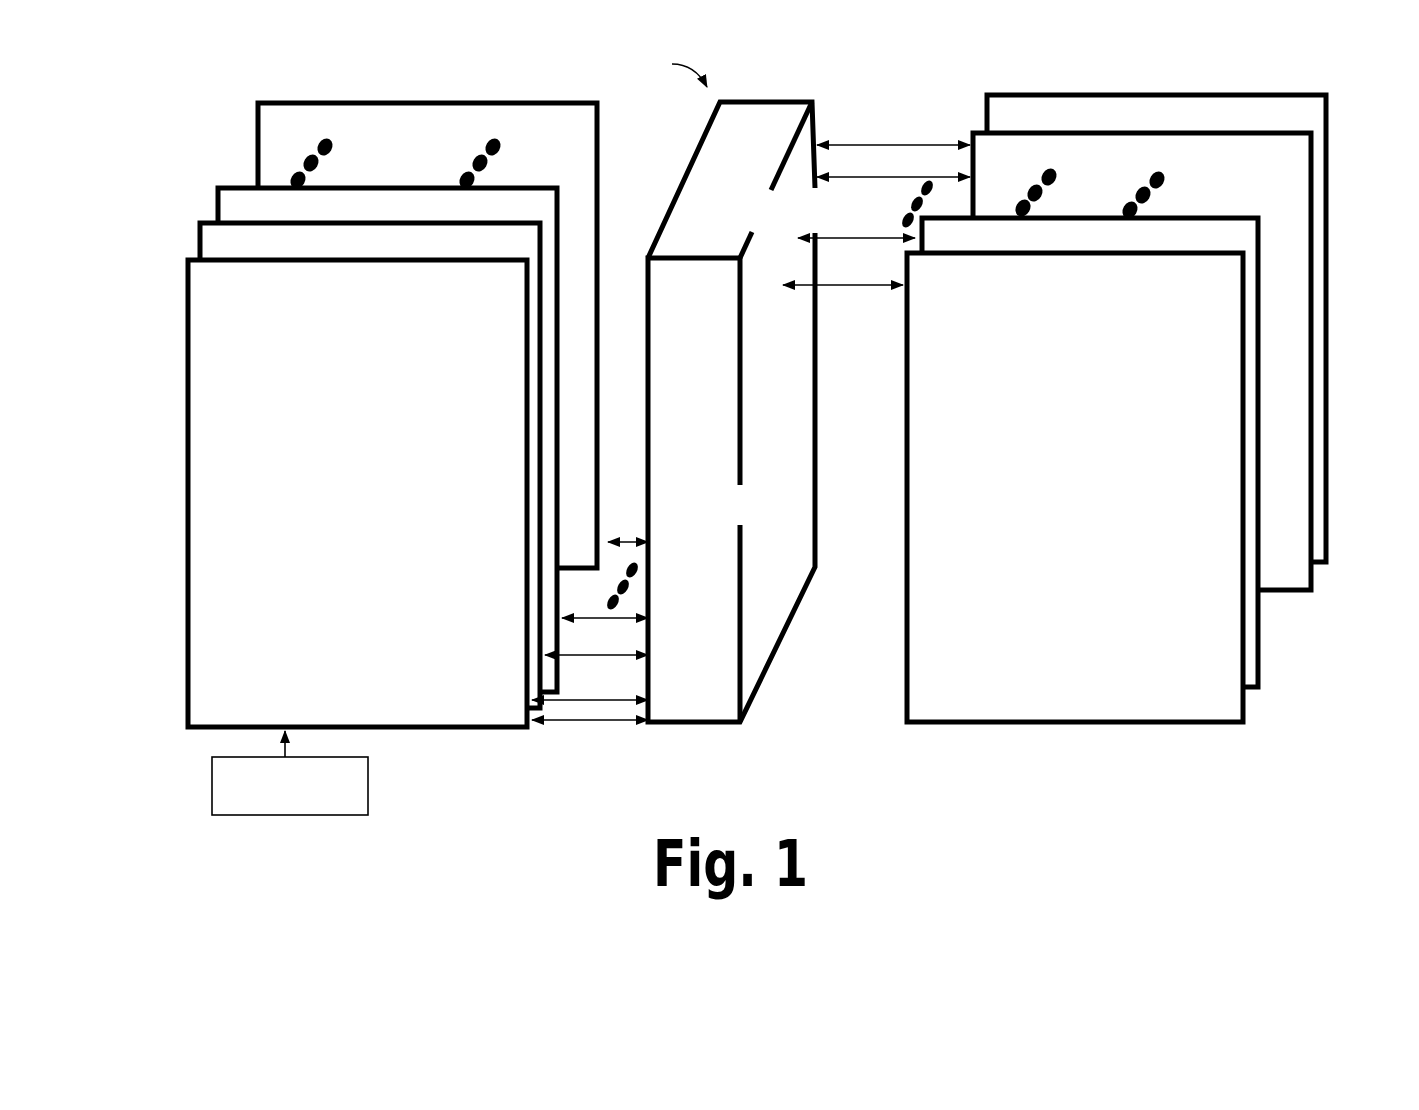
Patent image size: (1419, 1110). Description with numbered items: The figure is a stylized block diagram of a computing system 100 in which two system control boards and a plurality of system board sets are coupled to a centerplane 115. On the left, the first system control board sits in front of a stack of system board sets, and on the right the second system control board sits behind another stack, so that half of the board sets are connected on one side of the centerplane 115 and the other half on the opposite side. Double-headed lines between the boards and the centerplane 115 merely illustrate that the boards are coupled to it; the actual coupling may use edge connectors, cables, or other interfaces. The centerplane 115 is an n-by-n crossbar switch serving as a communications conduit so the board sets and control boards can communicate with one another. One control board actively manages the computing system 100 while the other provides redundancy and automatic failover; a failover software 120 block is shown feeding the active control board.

The computing system 100 is at (200, 44).
The centerplane 115 is at (727, 714).
The failover software 120 is at (368, 790).